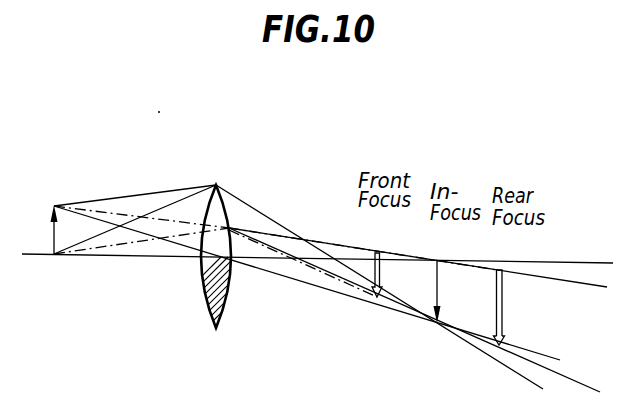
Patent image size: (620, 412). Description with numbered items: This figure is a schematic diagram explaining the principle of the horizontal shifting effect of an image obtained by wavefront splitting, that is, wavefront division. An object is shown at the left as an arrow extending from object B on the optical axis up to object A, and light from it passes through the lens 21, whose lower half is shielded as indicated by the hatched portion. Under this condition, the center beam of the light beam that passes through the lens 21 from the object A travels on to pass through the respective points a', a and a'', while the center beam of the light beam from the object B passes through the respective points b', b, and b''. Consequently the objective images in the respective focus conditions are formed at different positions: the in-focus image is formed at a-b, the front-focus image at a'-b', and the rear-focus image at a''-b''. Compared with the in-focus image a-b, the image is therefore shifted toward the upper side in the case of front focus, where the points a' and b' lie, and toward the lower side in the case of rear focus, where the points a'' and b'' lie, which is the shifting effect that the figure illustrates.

The lens 21 is at (217, 186).
The object A is at (58, 200).
The object B is at (57, 264).
The in-focus image point of object A a is at (430, 331).
The in-focus image point of object B b is at (445, 268).
The front-focus image point of object A a' is at (304, 284).
The front-focus image point of object B b' is at (387, 258).
The rear-focus image point of object A a'' is at (489, 364).
The rear-focus image point of object B b'' is at (510, 283).